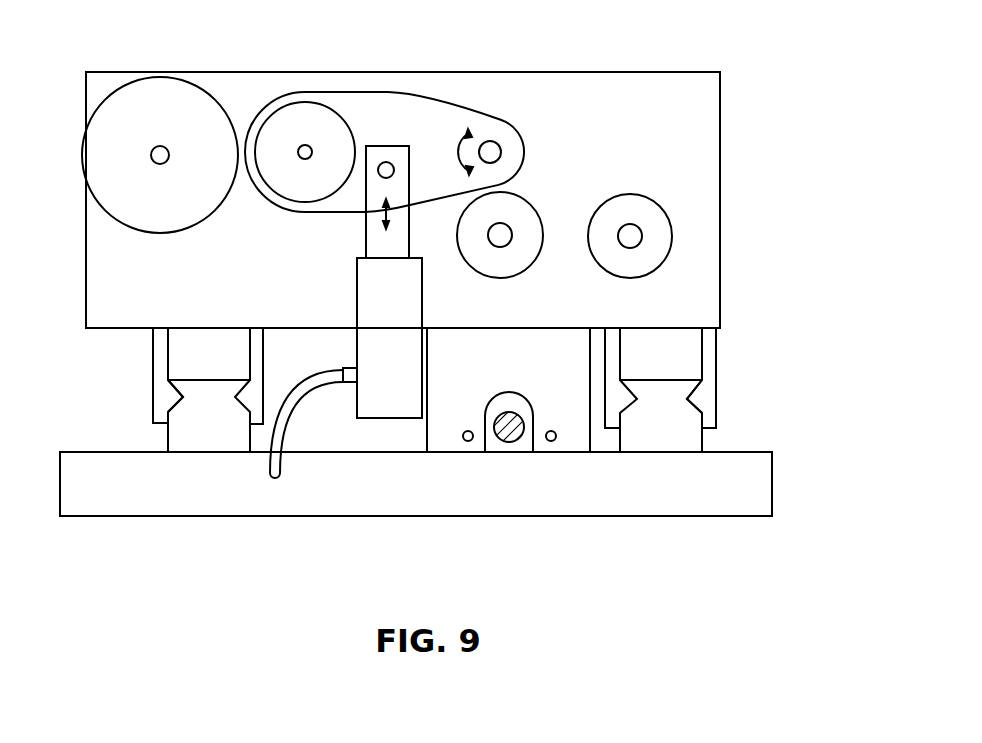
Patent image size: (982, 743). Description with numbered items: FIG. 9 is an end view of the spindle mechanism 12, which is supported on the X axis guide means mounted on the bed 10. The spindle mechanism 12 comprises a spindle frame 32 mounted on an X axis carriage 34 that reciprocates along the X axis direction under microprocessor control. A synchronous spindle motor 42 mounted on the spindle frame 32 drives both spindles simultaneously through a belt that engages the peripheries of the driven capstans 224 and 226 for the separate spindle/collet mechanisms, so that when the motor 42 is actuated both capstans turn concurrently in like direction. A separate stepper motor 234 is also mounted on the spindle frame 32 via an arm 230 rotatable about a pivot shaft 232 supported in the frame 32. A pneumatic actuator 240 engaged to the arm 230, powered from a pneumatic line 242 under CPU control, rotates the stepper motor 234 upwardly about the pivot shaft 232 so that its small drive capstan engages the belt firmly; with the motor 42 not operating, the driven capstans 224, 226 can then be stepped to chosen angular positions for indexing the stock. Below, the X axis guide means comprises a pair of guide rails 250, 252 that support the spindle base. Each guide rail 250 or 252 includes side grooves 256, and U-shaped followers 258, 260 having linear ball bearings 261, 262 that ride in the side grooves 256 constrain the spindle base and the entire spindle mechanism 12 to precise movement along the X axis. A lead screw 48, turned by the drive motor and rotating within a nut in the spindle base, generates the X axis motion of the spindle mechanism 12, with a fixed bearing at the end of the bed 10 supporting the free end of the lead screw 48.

The bed 10 is at (737, 497).
The spindle mechanism 12 is at (752, 277).
The spindle frame 32 is at (720, 133).
The X axis carriage 34 is at (545, 355).
The spindle motor 42 is at (158, 92).
The lead screw 48 is at (509, 442).
The driven capstan 224 is at (652, 192).
The driven capstan 226 is at (533, 202).
The arm 230 is at (423, 95).
The pivot shaft 232 is at (494, 143).
The stepper motor 234 is at (337, 108).
The pneumatic actuator 240 is at (357, 280).
The pneumatic line 242 is at (298, 410).
The guide rail 250 is at (223, 442).
The guide rail 252 is at (665, 437).
The side grooves 256 is at (185, 400).
The U-shaped follower 258 is at (160, 417).
The U-shaped follower 260 is at (613, 417).
The linear ball bearing 261 is at (690, 399).
The linear ball bearing 262 is at (180, 397).